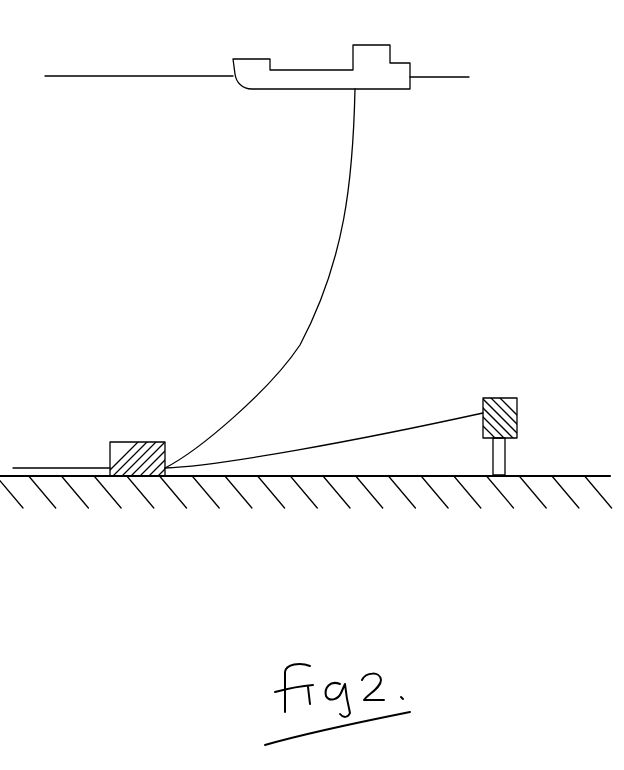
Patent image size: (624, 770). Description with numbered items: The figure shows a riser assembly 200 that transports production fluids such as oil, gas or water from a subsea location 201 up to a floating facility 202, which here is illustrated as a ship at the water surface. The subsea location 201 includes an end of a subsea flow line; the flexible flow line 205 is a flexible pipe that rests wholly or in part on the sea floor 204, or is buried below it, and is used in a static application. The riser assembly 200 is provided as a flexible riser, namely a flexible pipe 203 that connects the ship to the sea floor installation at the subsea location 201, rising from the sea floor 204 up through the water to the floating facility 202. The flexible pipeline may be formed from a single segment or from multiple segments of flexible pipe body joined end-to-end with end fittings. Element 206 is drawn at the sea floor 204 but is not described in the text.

The riser assembly 200 is at (306, 261).
The subsea location 201 is at (143, 440).
The floating facility 202 is at (252, 57).
The flexible pipe 203 is at (301, 325).
The sea floor 204 is at (560, 473).
The flexible flow line 205 is at (63, 467).
The sensor / instrument on post 206 is at (428, 421).